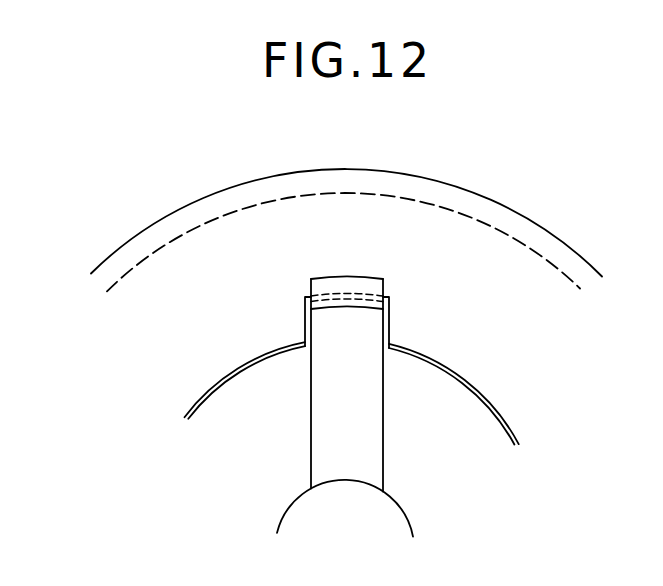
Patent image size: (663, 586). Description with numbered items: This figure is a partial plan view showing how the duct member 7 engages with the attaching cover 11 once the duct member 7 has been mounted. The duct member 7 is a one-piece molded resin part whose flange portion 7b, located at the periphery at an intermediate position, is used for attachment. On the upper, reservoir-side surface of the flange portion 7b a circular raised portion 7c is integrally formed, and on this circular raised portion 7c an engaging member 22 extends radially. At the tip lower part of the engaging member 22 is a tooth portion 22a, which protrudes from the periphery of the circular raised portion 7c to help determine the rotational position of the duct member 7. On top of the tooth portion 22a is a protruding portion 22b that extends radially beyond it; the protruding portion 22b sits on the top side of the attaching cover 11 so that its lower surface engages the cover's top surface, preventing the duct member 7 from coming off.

The attaching cover 11 is at (115, 248).
The flange portion 7b is at (213, 257).
The engaging member 22 is at (328, 412).
The protruding portion 22b is at (362, 282).
The tooth portion 22a is at (381, 302).
The circular raised portion 7c is at (480, 425).
The duct member 7 is at (407, 513).